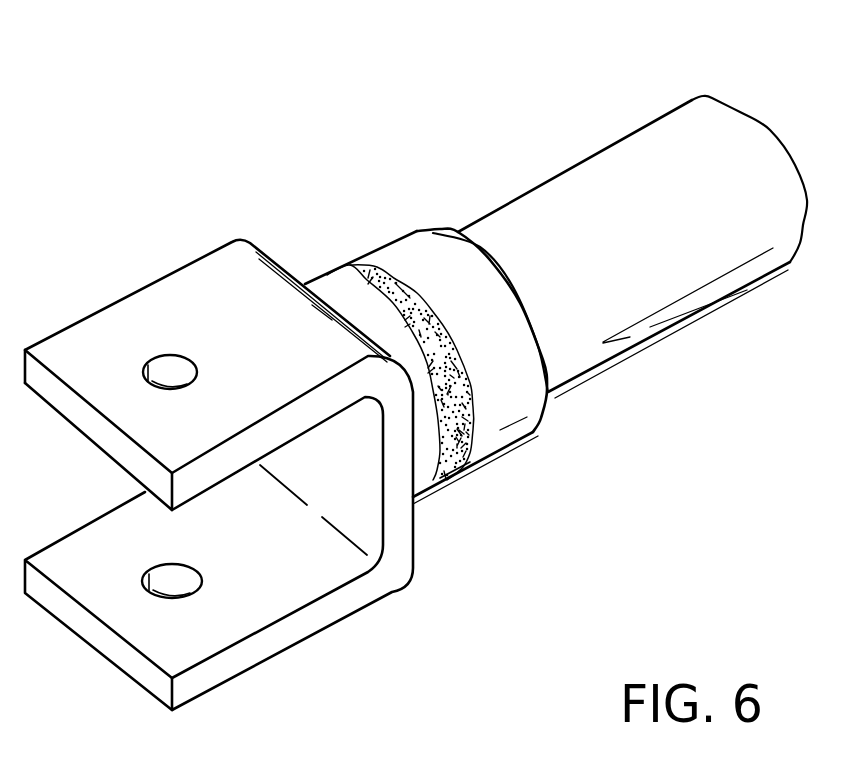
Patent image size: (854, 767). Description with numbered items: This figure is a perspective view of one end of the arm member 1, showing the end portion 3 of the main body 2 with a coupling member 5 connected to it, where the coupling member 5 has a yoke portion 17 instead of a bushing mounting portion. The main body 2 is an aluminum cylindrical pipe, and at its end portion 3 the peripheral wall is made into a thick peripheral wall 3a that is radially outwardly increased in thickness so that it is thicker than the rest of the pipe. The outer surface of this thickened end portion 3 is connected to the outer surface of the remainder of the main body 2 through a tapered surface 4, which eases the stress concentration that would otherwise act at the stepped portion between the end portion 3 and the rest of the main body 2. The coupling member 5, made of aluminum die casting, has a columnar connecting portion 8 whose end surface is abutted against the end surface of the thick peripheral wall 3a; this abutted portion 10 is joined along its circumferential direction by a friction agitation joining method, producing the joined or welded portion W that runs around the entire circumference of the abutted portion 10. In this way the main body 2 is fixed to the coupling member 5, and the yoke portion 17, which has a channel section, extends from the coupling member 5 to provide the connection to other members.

The arm member 1 is at (380, 127).
The main body 2 is at (628, 173).
The end portion 3 is at (418, 267).
The thick peripheral wall 3a is at (517, 443).
The tapered surface 4 is at (540, 347).
The coupling member 5 is at (213, 263).
The connecting portion 8 is at (322, 277).
The abutted portion 10 is at (393, 280).
The yoke portion 17 is at (117, 370).
The joined or welded portion W is at (487, 463).